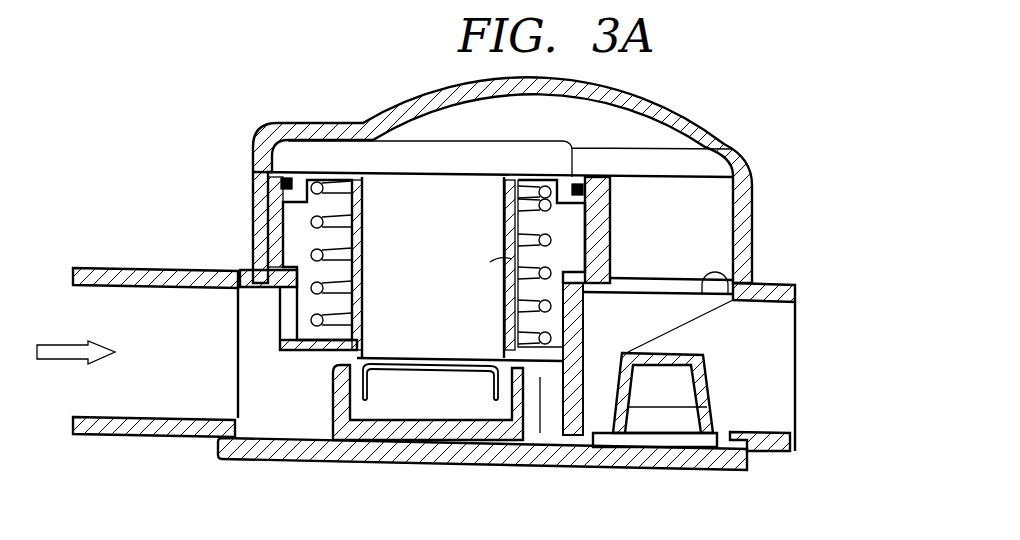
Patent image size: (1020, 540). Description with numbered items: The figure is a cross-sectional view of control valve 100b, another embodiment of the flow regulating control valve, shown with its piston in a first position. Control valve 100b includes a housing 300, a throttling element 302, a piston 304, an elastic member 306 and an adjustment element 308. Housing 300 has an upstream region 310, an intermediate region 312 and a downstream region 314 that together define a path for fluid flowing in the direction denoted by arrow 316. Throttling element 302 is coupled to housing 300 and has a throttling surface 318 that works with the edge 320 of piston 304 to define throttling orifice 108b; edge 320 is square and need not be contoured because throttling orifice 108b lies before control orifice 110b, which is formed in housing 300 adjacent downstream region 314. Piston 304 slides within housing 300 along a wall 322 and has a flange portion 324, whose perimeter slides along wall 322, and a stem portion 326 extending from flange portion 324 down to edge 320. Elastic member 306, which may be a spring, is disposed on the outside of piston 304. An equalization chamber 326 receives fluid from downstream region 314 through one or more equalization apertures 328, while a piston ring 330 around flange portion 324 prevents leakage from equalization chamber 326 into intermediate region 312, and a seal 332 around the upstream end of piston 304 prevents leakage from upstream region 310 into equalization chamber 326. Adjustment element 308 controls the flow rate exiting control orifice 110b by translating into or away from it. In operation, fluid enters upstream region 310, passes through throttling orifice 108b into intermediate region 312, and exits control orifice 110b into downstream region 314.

The control valve 100b is at (397, 50).
The throttling orifice 108b is at (370, 432).
The control orifice 110b is at (750, 277).
The housing 300 is at (720, 123).
The throttling element 302 is at (463, 452).
The piston 304 is at (365, 241).
The elastic member 306 is at (337, 178).
The adjustment element 308 is at (717, 406).
The upstream region 310 is at (182, 393).
The intermediate region 312 is at (430, 285).
The downstream region 314 is at (777, 397).
The arrow 316 is at (52, 361).
The throttling surface 318 is at (483, 380).
The edge of piston 320 is at (345, 372).
The wall 322 is at (276, 185).
The flange portion 324 is at (284, 176).
The equalization chamber 326 is at (290, 222).
The equalization aperture 328 is at (600, 292).
The piston ring 330 is at (255, 160).
The seal 332 is at (537, 422).